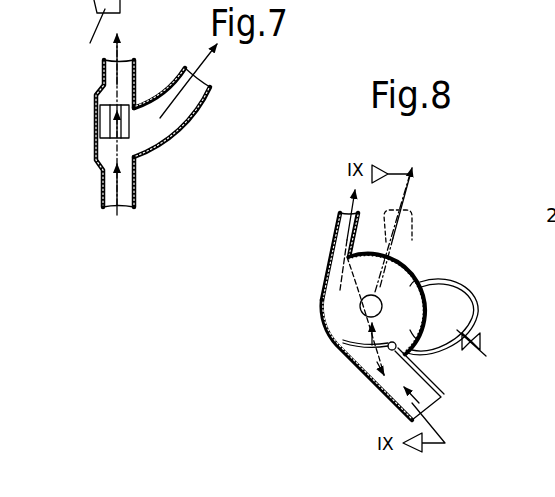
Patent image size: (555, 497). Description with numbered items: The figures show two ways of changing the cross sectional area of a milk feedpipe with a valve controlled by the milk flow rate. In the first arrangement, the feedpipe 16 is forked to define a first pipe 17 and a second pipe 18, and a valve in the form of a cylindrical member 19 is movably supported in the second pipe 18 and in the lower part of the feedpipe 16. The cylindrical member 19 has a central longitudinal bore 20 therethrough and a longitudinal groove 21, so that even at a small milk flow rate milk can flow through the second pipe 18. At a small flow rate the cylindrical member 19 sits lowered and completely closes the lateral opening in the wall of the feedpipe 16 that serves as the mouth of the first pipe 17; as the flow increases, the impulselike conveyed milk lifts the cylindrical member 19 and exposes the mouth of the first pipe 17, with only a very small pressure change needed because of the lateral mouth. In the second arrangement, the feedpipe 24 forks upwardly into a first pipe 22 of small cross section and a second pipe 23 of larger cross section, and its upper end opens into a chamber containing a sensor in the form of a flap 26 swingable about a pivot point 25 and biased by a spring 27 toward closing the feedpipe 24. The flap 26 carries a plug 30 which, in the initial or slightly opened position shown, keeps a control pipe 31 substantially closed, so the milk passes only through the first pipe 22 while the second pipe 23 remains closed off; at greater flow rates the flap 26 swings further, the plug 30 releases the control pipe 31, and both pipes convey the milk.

In FIG. 7, the feedpipe 16 is at (95, 170).
In FIG. 7, the first pipe 17 is at (157, 127).
In FIG. 7, the second pipe 18 is at (111, 78).
In FIG. 7, the cylindrical member 19 is at (113, 128).
In FIG. 7, the central longitudinal bore 20 is at (120, 110).
In FIG. 7, the longitudinal groove 21 is at (94, 107).
In FIG. 8, the first pipe 22 is at (346, 248).
In FIG. 8, the second pipe 23 is at (423, 233).
In FIG. 8, the feedpipe 24 is at (445, 398).
In FIG. 8, the pivot point 25 is at (440, 310).
In FIG. 8, the flap 26 is at (353, 337).
In FIG. 8, the spring 27 is at (455, 287).
In FIG. 8, the plug 30 is at (400, 352).
In FIG. 8, the control pipe 31 is at (486, 338).